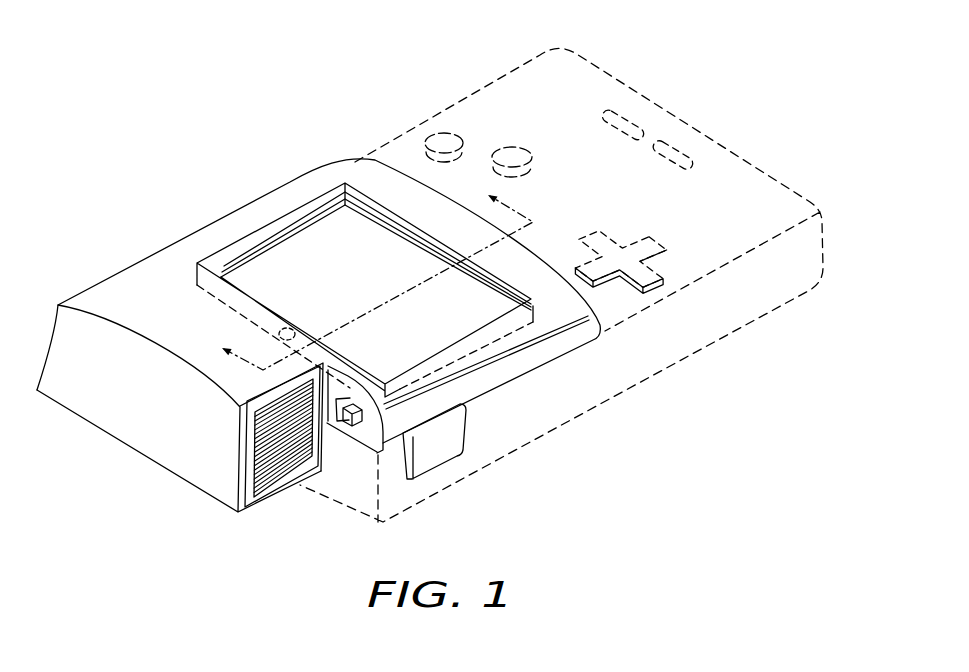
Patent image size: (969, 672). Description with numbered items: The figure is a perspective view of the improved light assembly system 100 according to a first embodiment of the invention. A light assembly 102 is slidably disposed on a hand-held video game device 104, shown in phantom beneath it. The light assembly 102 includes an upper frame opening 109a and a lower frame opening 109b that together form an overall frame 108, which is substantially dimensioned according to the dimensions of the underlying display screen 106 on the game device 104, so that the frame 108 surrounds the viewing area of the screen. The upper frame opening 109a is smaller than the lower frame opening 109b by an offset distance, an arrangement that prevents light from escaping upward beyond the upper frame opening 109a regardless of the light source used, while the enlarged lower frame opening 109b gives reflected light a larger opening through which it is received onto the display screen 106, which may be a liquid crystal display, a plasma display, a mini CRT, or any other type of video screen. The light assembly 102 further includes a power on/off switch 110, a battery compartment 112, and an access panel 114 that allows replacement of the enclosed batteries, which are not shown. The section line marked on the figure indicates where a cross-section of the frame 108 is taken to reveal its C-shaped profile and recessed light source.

The light assembly system 100 is at (106, 146).
The light assembly 102 is at (121, 286).
The hand-held video game device 104 is at (508, 90).
The display screen 106 is at (350, 233).
The frame 108 is at (229, 253).
The upper frame opening 109a is at (297, 216).
The lower frame opening 109b is at (263, 243).
The power on/off switch 110 is at (345, 425).
The battery compartment 112 is at (128, 433).
The access panel 114 is at (258, 464).